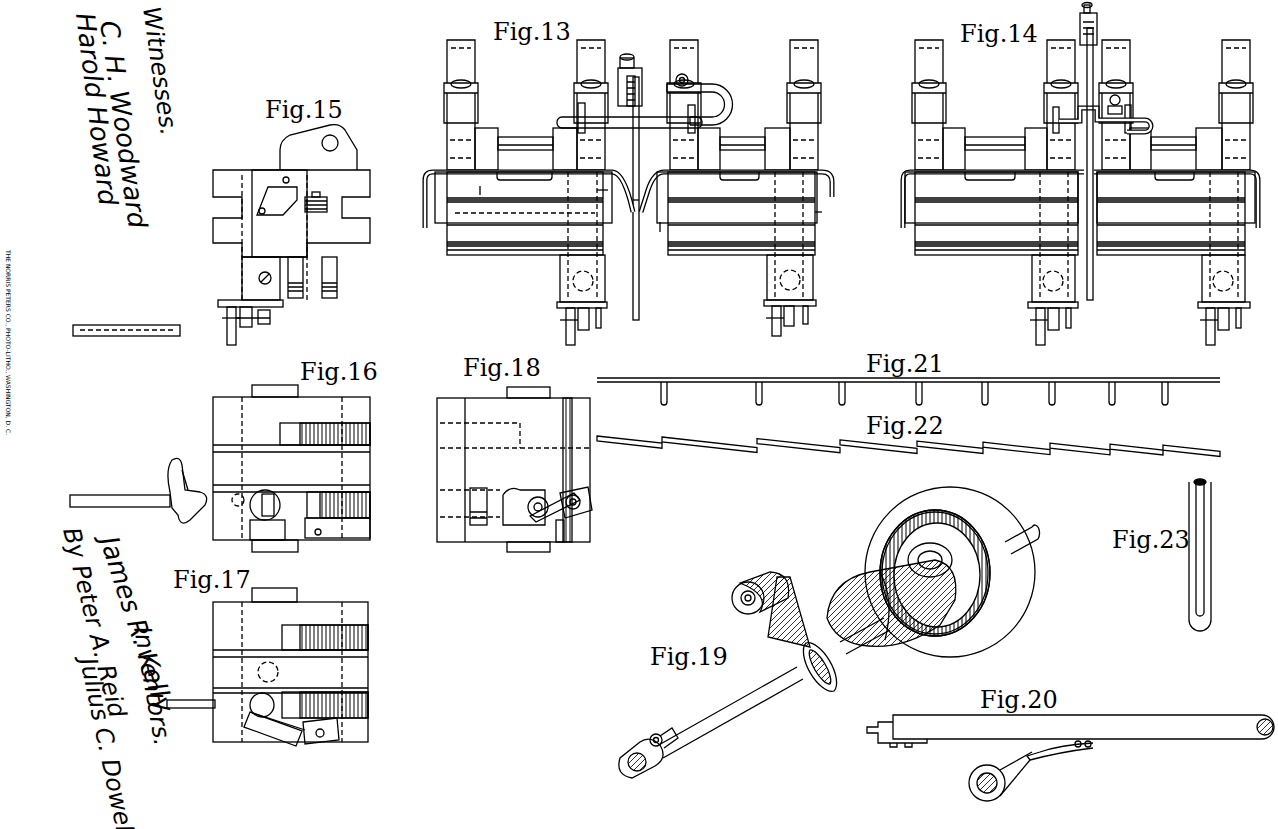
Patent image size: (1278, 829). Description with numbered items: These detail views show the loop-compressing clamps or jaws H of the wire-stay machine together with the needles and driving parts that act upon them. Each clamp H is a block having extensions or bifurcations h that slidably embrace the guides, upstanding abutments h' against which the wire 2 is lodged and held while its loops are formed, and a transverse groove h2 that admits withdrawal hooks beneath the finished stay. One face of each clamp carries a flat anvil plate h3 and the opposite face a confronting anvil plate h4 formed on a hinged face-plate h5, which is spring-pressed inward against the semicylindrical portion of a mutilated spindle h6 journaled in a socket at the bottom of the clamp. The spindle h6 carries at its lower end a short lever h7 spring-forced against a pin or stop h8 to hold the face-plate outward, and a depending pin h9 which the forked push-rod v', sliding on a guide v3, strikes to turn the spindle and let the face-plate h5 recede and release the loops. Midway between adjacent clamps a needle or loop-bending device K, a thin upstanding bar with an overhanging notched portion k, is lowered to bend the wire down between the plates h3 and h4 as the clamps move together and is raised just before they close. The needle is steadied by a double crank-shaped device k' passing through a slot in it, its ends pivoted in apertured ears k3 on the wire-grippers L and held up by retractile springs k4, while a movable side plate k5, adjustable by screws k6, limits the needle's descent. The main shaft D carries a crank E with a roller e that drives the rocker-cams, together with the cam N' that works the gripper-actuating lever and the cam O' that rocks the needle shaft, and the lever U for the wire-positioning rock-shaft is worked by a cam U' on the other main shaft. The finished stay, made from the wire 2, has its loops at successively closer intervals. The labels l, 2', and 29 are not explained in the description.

In FIG. 13, the standard post l is at (475, 68).
In FIG. 14, the standard post l is at (1225, 55).
In FIG. 13, the wire-grippers L is at (447, 142).
In FIG. 14, the wire-grippers L is at (1222, 115).
In FIG. 13, the wires 2 is at (628, 194).
In FIG. 14, the wires 2 is at (1071, 194).
In FIG. 21, the wires 2 is at (908, 391).
In FIG. 23, the wires 2 is at (1188, 548).
In FIG. 22, the wire strip 2' is at (908, 429).
In FIG. 13, the abutments h' is at (632, 135).
In FIG. 14, the abutments h' is at (1082, 149).
In FIG. 15, the abutments h' is at (307, 147).
In FIG. 16, the abutments h' is at (314, 433).
In FIG. 13, the bifurcations h is at (474, 208).
In FIG. 15, the bifurcations h is at (286, 208).
In FIG. 13, the transverse grooves h2 is at (528, 180).
In FIG. 16, the transverse grooves h2 is at (358, 470).
In FIG. 13, the anvil plates h3 is at (437, 198).
In FIG. 16, the anvil plates h3 is at (280, 390).
In FIG. 17, the anvil plates h3 is at (297, 596).
In FIG. 18, the anvil plates h3 is at (533, 396).
In FIG. 13, the confronting anvil plates h4 is at (843, 214).
In FIG. 15, the confronting anvil plates h4 is at (279, 213).
In FIG. 16, the confronting anvil plates h4 is at (275, 552).
In FIG. 17, the confronting anvil plates h4 is at (272, 744).
In FIG. 18, the confronting anvil plates h4 is at (522, 554).
In FIG. 15, the movable face-plates h5 is at (255, 235).
In FIG. 16, the movable face-plates h5 is at (300, 530).
In FIG. 17, the movable face-plates h5 is at (310, 744).
In FIG. 16, the mutilated spindles h6 is at (263, 495).
In FIG. 17, the mutilated spindles h6 is at (270, 702).
In FIG. 13, the short levers h7 is at (560, 304).
In FIG. 15, the short levers h7 is at (280, 307).
In FIG. 18, the short levers h7 is at (590, 512).
In FIG. 13, the stops h8 is at (603, 320).
In FIG. 15, the stops h8 is at (256, 328).
In FIG. 18, the stops h8 is at (559, 544).
In FIG. 13, the depending pins h9 is at (571, 330).
In FIG. 15, the depending pins h9 is at (231, 346).
In FIG. 18, the depending pins h9 is at (582, 500).
In FIG. 13, the loop-compressing clamps H is at (626, 239).
In FIG. 14, the loop-compressing clamps H is at (1080, 258).
In FIG. 15, the loop-compressing clamps H is at (291, 218).
In FIG. 16, the loop-compressing clamps H is at (270, 468).
In FIG. 17, the loop-compressing clamps H is at (267, 672).
In FIG. 18, the loop-compressing clamps H is at (493, 470).
In FIG. 13, the needles K is at (640, 274).
In FIG. 14, the needles K is at (1093, 284).
In FIG. 13, the notched portions k is at (624, 233).
In FIG. 13, the double crank-shaped devices k' is at (657, 77).
In FIG. 13, the apertured ears k3 is at (580, 107).
In FIG. 14, the apertured ears k3 is at (1092, 119).
In FIG. 13, the retractile springs k4 is at (690, 78).
In FIG. 14, the retractile springs k4 is at (1105, 120).
In FIG. 13, the movable side plates k5 is at (620, 103).
In FIG. 14, the movable side plates k5 is at (1083, 50).
In FIG. 13, the screws k6 is at (632, 66).
In FIG. 14, the screws k6 is at (1097, 20).
In FIG. 16, the push-rods v' is at (138, 490).
In FIG. 15, the guides v3 is at (172, 332).
In FIG. 16, the guides v3 is at (195, 478).
In FIG. 19, the rollers e is at (748, 583).
In FIG. 19, the cranks E is at (772, 640).
In FIG. 19, the cam N' is at (889, 603).
In FIG. 19, the cam O' is at (952, 572).
In FIG. 19, the main shaft D is at (752, 707).
In FIG. 19, the clevis 29 is at (648, 740).
In FIG. 20, the lever U is at (1070, 718).
In FIG. 20, the cam U' is at (1031, 771).